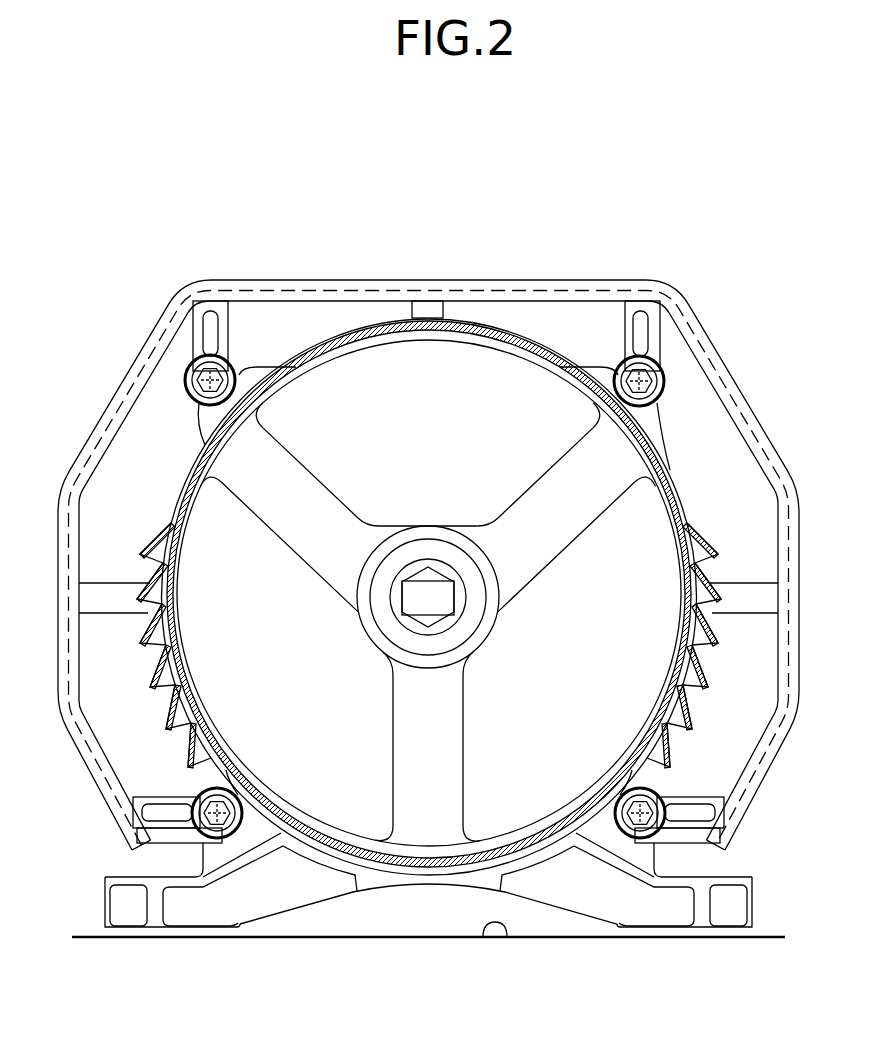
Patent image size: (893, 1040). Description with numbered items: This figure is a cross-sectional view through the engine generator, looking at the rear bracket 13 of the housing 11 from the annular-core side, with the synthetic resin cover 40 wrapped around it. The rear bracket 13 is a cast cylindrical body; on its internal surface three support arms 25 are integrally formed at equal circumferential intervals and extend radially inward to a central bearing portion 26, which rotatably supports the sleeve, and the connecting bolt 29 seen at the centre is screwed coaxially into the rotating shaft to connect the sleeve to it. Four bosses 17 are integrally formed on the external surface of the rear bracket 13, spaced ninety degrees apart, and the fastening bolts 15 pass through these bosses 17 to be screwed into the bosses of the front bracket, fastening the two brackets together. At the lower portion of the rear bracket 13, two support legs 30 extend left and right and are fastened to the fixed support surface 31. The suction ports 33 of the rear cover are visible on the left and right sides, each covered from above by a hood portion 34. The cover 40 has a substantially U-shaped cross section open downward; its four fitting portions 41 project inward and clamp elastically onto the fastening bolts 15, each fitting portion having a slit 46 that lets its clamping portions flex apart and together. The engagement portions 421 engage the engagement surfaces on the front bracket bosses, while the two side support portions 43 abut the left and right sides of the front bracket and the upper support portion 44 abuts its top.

The housing 11 is at (333, 316).
The rear bracket 13 is at (522, 330).
The fastening bolt 15 is at (197, 390).
The boss 17 is at (240, 378).
The support arm 25 is at (303, 482).
The bearing portion 26 is at (475, 620).
The connecting bolt 29 is at (424, 585).
The support leg 30 is at (205, 932).
The fixed support surface 31 is at (497, 926).
The suction port 33 is at (703, 658).
The hood portion 34 is at (150, 700).
The cover 40 is at (402, 288).
The fitting portion 41 is at (228, 315).
The engagement portion 421 is at (190, 340).
The support portion 43 is at (112, 596).
The support portion 44 is at (436, 307).
The slit 46 is at (208, 322).